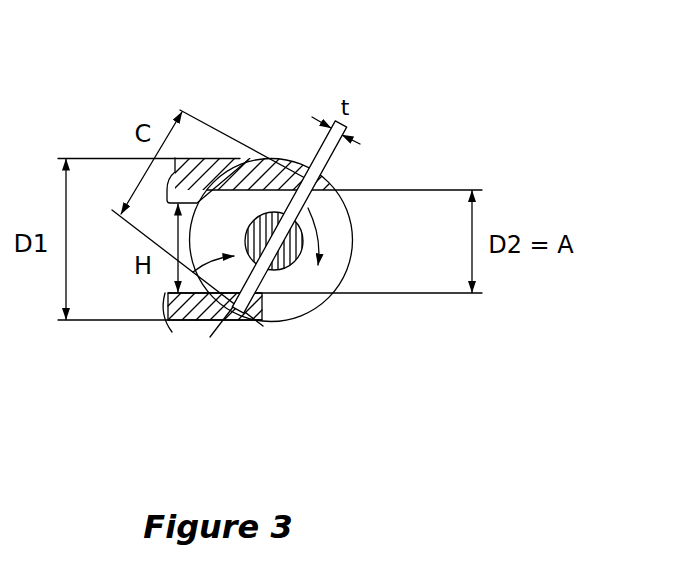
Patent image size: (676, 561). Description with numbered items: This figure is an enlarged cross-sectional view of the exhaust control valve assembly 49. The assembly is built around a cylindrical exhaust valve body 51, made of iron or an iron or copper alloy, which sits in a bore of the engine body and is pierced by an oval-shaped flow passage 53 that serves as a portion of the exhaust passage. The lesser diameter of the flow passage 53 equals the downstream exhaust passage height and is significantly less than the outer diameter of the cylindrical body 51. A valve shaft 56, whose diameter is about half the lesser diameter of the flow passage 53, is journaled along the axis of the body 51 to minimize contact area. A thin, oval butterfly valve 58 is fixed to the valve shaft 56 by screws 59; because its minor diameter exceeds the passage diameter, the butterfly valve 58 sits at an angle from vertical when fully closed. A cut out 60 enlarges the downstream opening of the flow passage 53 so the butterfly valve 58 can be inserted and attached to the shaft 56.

The exhaust control valve assembly 49 is at (279, 190).
The flow passage 53 is at (337, 197).
The cylindrical exhaust valve body 51 is at (252, 305).
The screws 59 is at (303, 258).
The butterfly valve 58 is at (273, 323).
The cut out 60 is at (283, 313).
The valve shaft 56 is at (197, 232).